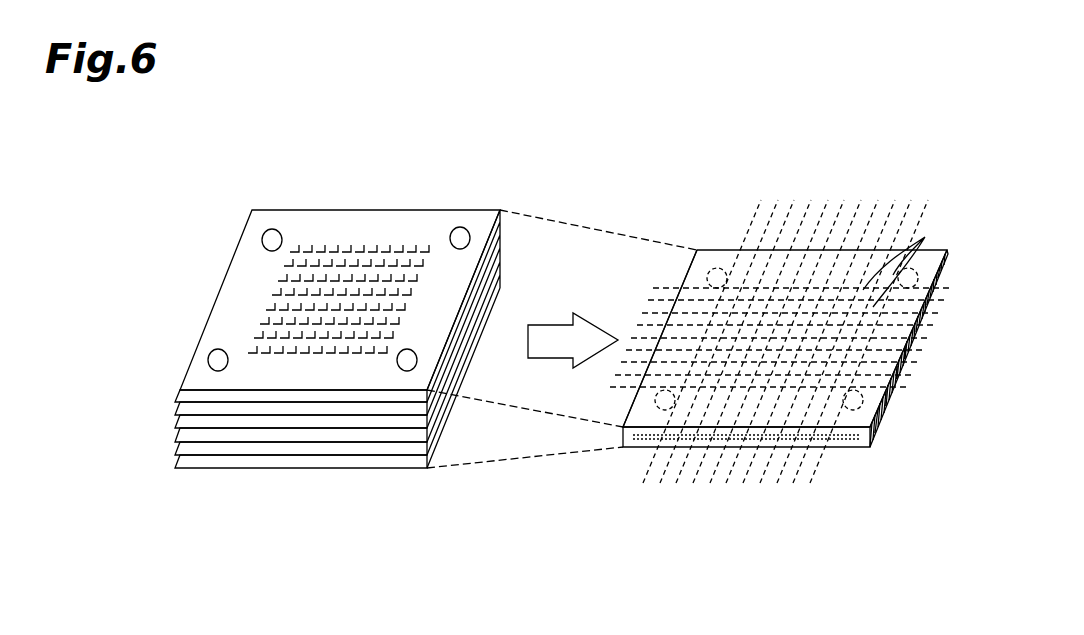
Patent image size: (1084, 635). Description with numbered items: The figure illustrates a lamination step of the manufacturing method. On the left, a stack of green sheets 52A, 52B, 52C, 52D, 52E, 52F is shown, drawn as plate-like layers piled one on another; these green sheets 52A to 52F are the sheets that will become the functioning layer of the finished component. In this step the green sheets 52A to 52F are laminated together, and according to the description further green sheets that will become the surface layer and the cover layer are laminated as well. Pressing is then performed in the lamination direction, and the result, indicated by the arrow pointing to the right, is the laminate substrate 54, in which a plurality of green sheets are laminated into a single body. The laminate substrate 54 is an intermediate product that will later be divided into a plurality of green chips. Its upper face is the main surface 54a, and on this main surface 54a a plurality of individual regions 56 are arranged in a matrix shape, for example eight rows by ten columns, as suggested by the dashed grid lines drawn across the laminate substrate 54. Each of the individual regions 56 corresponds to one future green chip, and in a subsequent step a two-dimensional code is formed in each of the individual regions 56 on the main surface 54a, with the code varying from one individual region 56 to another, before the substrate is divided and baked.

The green sheet 52A is at (185, 377).
The green sheet 52B is at (180, 392).
The green sheet 52C is at (180, 412).
The green sheet 52D is at (181, 437).
The green sheet 52E is at (182, 452).
The green sheet 52F is at (182, 469).
The laminate substrate 54 is at (729, 249).
The main surface 54a is at (697, 256).
The individual regions 56 is at (910, 259).